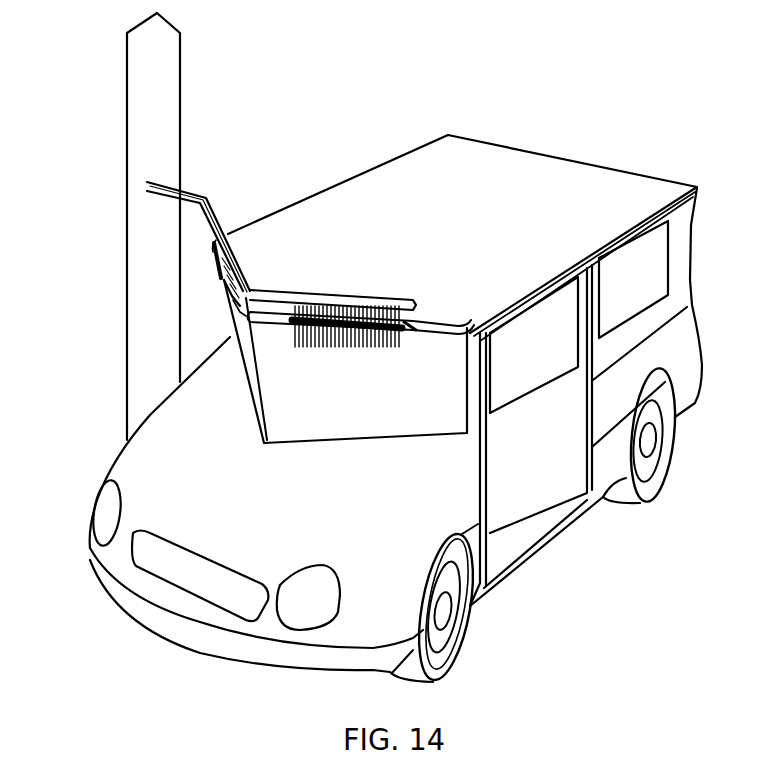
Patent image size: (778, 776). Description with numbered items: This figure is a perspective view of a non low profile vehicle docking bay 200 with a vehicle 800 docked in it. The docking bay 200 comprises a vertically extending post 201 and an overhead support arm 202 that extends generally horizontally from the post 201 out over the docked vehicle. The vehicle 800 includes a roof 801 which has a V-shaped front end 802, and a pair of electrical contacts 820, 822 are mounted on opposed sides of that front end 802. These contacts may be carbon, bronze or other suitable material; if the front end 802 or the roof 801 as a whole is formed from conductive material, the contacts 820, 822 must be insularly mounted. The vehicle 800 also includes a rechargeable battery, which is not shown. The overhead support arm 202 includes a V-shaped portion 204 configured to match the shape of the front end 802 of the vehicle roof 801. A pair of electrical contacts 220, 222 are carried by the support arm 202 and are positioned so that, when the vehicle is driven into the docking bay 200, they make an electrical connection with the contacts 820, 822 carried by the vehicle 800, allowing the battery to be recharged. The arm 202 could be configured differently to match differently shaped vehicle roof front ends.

The vehicle docking bay 200 is at (182, 75).
The vertically extending post 201 is at (127, 114).
The overhead support arm 202 is at (140, 190).
The V-shaped portion 204 is at (268, 292).
The electrical contact 220 is at (333, 340).
The electrical contact 222 is at (222, 282).
The vehicle 800 is at (167, 470).
The roof 801 is at (502, 173).
The V-shaped front end 802 is at (440, 325).
The electrical contact 820 is at (410, 334).
The electrical contact 822 is at (218, 265).